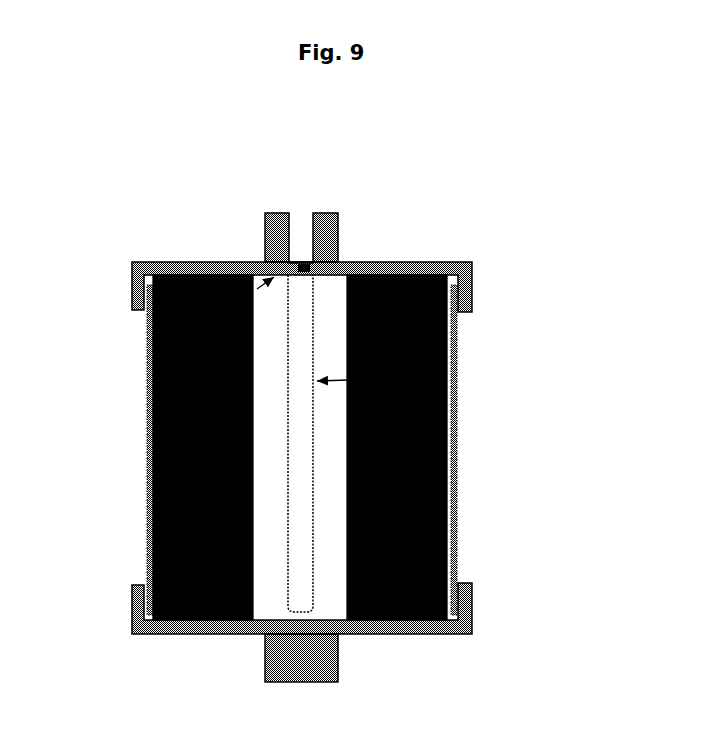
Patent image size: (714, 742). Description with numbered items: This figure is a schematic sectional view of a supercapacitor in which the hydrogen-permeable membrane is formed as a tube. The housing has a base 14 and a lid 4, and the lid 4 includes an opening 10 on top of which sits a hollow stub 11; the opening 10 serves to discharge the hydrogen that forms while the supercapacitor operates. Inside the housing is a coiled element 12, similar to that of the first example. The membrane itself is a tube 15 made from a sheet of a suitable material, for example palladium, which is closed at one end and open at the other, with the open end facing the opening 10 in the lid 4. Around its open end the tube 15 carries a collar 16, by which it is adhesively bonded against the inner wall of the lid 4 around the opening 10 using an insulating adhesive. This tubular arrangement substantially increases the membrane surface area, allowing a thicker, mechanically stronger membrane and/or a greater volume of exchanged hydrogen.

The lid 4 is at (192, 262).
The opening 10 is at (307, 265).
The hollow stub 11 is at (263, 228).
The coiled element 12 is at (157, 495).
The base 14 is at (359, 638).
The tube 15 is at (445, 372).
The collar 16 is at (155, 345).